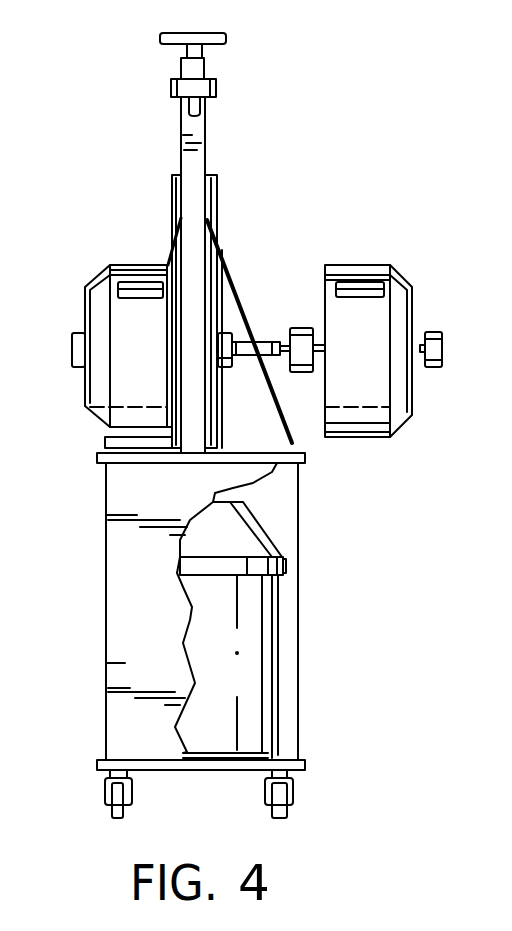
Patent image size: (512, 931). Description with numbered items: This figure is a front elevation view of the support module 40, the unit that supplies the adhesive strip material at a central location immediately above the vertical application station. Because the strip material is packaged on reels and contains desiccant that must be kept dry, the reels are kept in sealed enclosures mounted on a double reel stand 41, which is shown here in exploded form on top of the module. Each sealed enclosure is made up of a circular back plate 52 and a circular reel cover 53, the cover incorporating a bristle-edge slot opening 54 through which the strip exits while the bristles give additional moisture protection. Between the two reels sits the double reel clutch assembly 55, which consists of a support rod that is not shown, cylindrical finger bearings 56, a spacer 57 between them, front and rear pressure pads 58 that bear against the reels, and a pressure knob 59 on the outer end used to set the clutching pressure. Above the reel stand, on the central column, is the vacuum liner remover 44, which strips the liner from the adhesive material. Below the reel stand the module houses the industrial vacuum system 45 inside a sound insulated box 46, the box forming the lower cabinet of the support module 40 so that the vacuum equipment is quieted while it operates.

The support module 40 is at (145, 463).
The double reel stand 41 is at (84, 390).
The vacuum liner remover 44 is at (227, 85).
The industrial vacuum system 45 is at (252, 670).
The sound insulated box 46 is at (125, 663).
The circular back plate 52 is at (219, 412).
The circular reel cover 53 is at (360, 412).
The bristle-edge slot opening 54 is at (135, 290).
The double reel clutch assembly 55 is at (241, 335).
The cylindrical finger bearings 56 is at (243, 357).
The spacer 57 is at (260, 342).
The front and rear pressure pads 58 is at (222, 333).
The pressure knob 59 is at (445, 350).